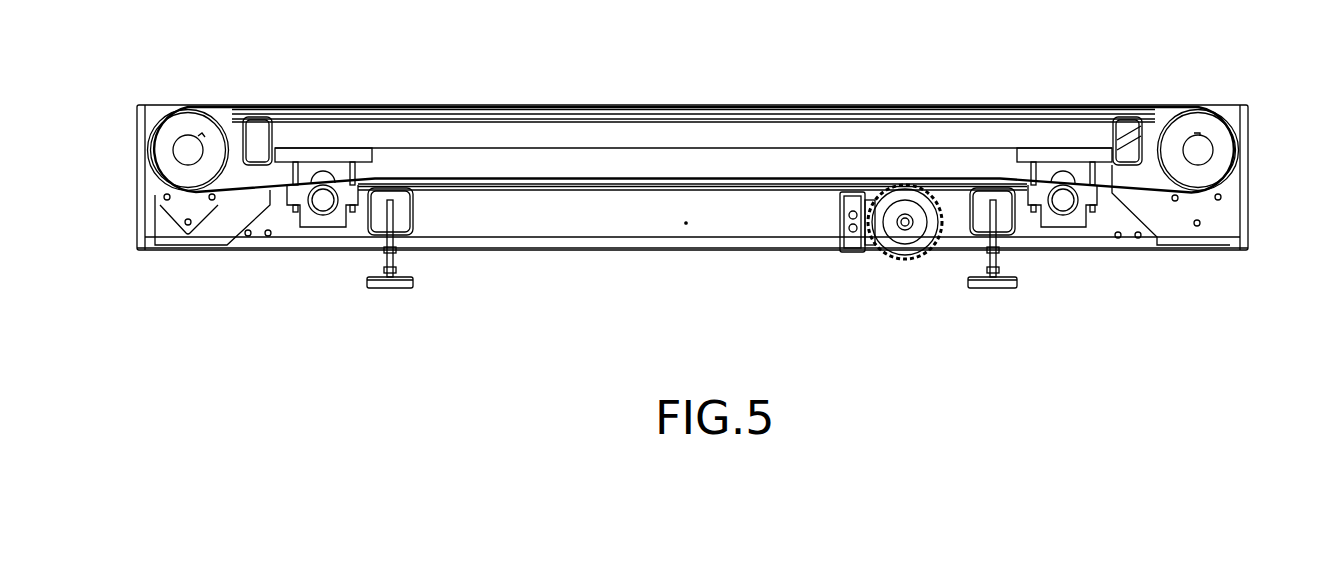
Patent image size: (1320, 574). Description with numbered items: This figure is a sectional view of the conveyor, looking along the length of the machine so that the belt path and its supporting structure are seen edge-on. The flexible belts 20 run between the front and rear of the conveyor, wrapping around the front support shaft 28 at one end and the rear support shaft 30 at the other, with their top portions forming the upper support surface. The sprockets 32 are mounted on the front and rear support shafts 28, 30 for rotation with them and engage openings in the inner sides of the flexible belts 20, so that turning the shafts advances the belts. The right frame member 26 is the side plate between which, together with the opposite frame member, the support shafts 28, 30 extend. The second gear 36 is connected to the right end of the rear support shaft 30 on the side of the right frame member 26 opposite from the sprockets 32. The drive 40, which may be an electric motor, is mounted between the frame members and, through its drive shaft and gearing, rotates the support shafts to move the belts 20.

The flexible belts 20 is at (953, 116).
The right frame member 26 is at (1220, 230).
The front support shaft 28 is at (1200, 150).
The rear support shaft 30 is at (186, 151).
The sprockets 32 is at (1215, 128).
The second gear 36 is at (168, 168).
The drive 40 is at (895, 234).